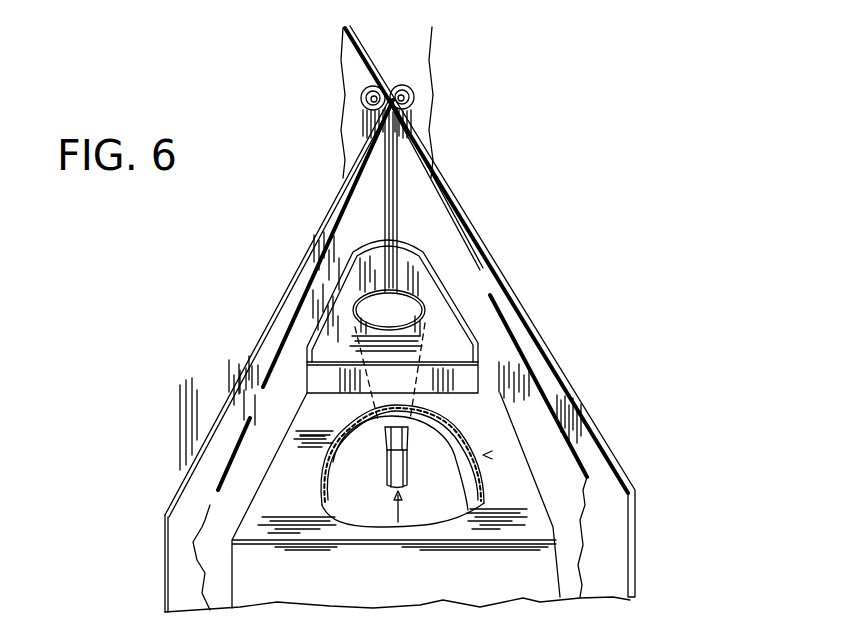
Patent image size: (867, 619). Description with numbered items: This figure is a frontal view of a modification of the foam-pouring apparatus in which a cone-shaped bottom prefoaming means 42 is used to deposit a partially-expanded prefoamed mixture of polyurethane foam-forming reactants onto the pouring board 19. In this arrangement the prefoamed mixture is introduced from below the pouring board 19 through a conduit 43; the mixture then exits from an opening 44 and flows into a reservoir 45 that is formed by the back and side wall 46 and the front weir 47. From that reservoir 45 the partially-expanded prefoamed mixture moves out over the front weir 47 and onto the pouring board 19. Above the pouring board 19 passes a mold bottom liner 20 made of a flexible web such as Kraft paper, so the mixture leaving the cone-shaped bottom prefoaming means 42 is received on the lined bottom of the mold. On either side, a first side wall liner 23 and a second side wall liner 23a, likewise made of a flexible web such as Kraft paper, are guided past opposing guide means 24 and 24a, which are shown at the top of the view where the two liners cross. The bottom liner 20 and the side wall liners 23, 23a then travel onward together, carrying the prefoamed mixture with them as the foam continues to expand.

The pouring board 19 is at (408, 464).
The mold bottom liner 20 is at (290, 502).
The first side wall liner 23 is at (332, 226).
The second side wall liner 23a is at (453, 250).
The guide means 24 is at (367, 88).
The guide means 24a is at (412, 88).
The cone-shaped bottom prefoaming means 42 is at (366, 452).
The conduit 43 is at (456, 454).
The opening 44 is at (405, 310).
The reservoir 45 is at (400, 355).
The back and side wall 46 is at (400, 242).
The front weir 47 is at (337, 380).